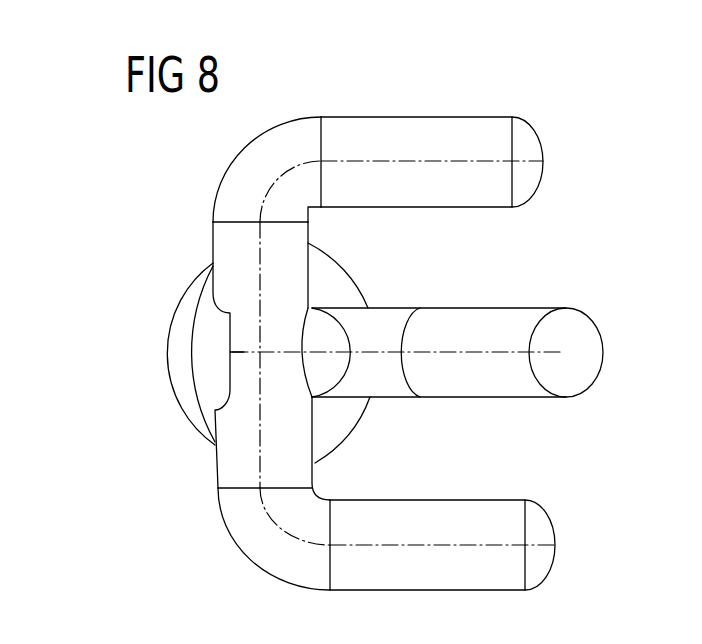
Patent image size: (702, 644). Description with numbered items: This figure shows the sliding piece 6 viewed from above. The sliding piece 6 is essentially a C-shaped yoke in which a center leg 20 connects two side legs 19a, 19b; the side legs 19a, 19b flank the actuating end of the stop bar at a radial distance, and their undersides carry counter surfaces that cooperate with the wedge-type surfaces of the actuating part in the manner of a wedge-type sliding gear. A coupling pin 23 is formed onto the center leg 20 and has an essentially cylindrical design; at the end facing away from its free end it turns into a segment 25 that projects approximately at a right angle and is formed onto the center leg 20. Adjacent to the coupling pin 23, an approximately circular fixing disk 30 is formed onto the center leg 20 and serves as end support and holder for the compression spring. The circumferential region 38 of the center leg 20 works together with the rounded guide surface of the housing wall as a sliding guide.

The sliding piece 6 is at (165, 187).
The side leg 19a is at (427, 177).
The side leg 19b is at (437, 528).
The center leg 20 is at (233, 461).
The coupling pin 23 is at (483, 368).
The segment 25 is at (337, 372).
The fixing disk 30 is at (190, 312).
The circumferential region 38 is at (292, 260).